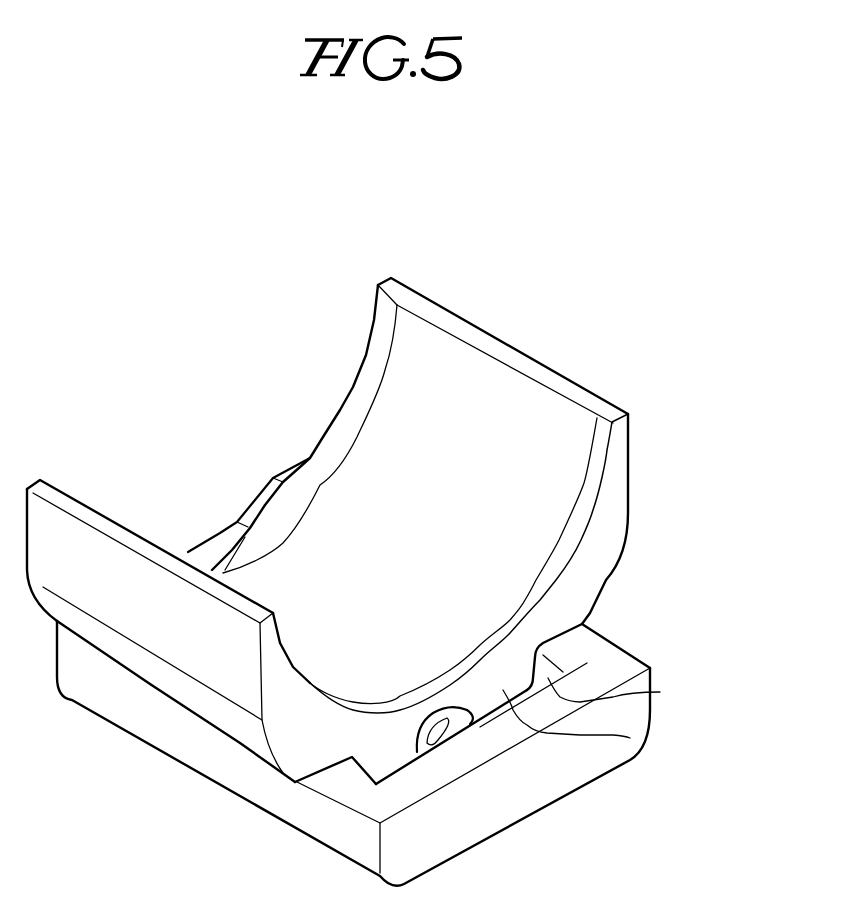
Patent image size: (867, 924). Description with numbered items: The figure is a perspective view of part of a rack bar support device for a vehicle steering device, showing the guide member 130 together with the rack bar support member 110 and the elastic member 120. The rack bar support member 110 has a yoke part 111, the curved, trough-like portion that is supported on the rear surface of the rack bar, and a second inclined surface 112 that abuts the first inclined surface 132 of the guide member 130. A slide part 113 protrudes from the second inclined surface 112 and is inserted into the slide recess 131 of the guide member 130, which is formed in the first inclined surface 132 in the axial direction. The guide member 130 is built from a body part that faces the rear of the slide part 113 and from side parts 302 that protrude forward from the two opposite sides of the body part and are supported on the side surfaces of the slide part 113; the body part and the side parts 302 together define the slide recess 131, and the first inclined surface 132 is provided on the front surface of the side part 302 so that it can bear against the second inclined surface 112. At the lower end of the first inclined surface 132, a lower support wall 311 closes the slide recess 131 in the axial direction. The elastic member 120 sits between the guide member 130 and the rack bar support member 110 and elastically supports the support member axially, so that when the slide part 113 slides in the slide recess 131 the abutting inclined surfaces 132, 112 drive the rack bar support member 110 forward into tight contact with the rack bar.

The rack bar support member 110 is at (373, 579).
The yoke part 111 is at (467, 413).
The second inclined surface 112 is at (345, 778).
The slide part 113 is at (630, 738).
The elastic member 120 is at (467, 727).
The guide member 130 is at (622, 663).
The slide recess 131 is at (660, 692).
The first inclined surface 132 is at (353, 777).
The side part 302 is at (388, 743).
The lower support wall 311 is at (540, 778).